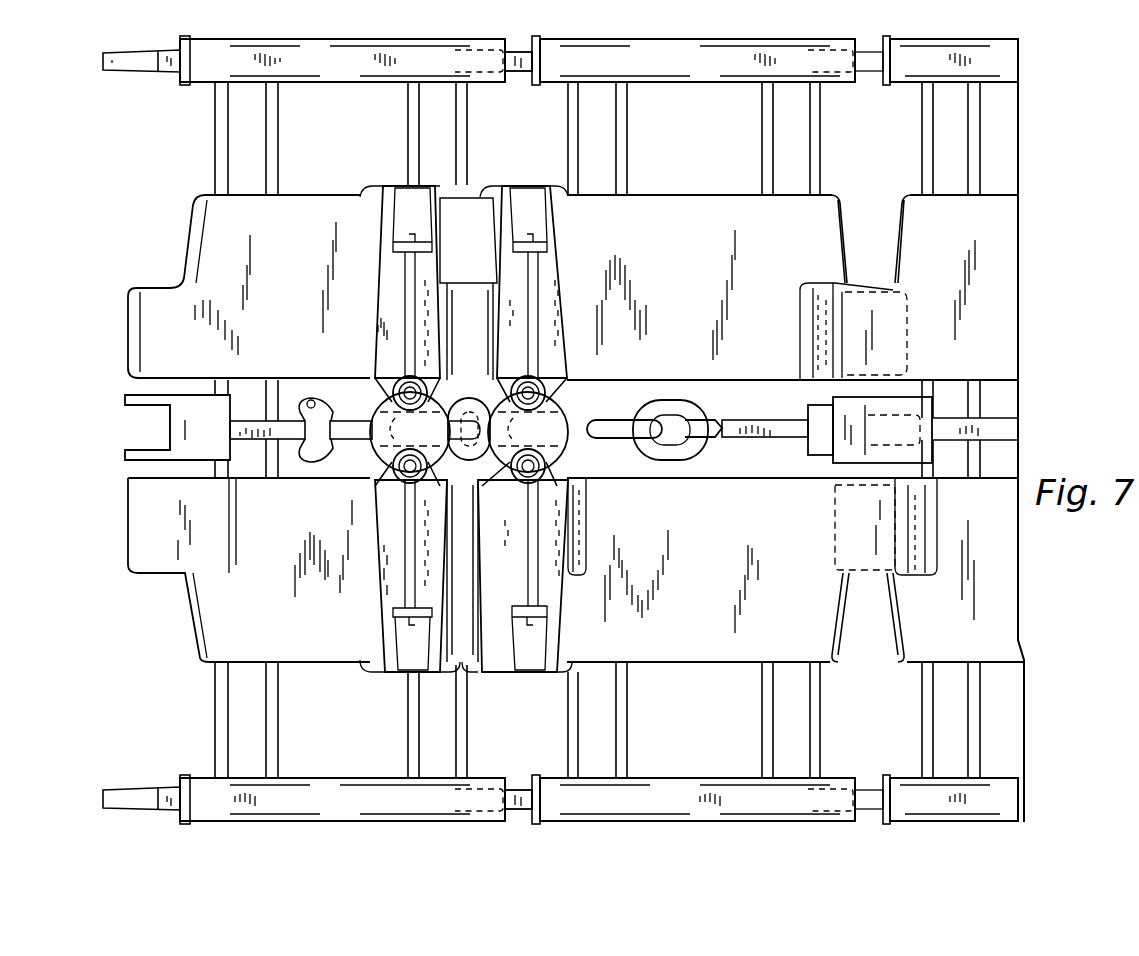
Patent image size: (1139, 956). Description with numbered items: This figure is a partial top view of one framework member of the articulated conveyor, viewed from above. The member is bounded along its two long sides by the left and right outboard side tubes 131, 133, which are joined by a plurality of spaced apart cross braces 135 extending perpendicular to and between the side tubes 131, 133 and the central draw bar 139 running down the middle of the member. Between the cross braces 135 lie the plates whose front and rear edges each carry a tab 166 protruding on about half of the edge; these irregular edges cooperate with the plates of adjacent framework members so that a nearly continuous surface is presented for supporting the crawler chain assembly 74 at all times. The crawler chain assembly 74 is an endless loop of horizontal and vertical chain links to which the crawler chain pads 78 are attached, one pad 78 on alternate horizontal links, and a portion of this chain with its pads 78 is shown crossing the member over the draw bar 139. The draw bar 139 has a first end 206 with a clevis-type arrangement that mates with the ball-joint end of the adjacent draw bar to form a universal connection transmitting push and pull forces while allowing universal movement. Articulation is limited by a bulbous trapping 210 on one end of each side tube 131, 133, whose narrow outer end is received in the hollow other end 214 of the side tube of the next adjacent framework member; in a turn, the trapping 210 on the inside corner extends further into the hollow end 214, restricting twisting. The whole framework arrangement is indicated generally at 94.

The clamping assembly 94 is at (1028, 703).
The right outboard side tube 133 is at (792, 72).
The left outboard side tube 131 is at (742, 800).
The cross braces 135 is at (245, 702).
The tab 166 is at (152, 302).
The first end 206 is at (127, 403).
The central draw bar 139 is at (304, 404).
The crawler chain assembly 74 is at (565, 398).
The crawler chain pad 78 is at (398, 572).
The trapping 210 is at (140, 797).
The hollow other end 214 is at (490, 815).